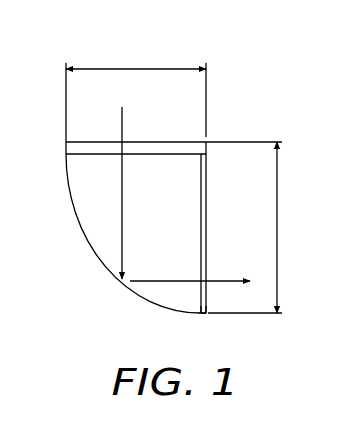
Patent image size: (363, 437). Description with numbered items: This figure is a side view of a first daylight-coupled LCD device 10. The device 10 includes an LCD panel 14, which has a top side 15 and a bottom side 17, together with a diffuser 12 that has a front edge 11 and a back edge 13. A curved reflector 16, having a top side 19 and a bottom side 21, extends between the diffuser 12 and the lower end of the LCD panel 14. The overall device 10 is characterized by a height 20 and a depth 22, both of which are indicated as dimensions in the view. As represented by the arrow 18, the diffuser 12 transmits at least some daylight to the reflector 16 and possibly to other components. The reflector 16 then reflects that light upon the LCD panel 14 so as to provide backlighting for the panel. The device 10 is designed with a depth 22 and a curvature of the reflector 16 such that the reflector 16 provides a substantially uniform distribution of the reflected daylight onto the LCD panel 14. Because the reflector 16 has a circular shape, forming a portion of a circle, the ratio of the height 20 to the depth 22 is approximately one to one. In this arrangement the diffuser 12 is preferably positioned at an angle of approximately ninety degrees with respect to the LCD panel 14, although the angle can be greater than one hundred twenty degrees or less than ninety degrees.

The daylight-coupled LCD device 10 is at (237, 73).
The front edge 11 is at (208, 142).
The diffuser 12 is at (67, 143).
The back edge 13 is at (67, 145).
The LCD panel 14 is at (208, 212).
The top side 15 is at (207, 155).
The curved reflector 16 is at (95, 255).
The bottom side 17 is at (202, 315).
The arrow 18 is at (123, 113).
The top side 19 is at (67, 157).
The height 20 is at (280, 210).
The bottom side 21 is at (200, 313).
The depth 22 is at (135, 68).